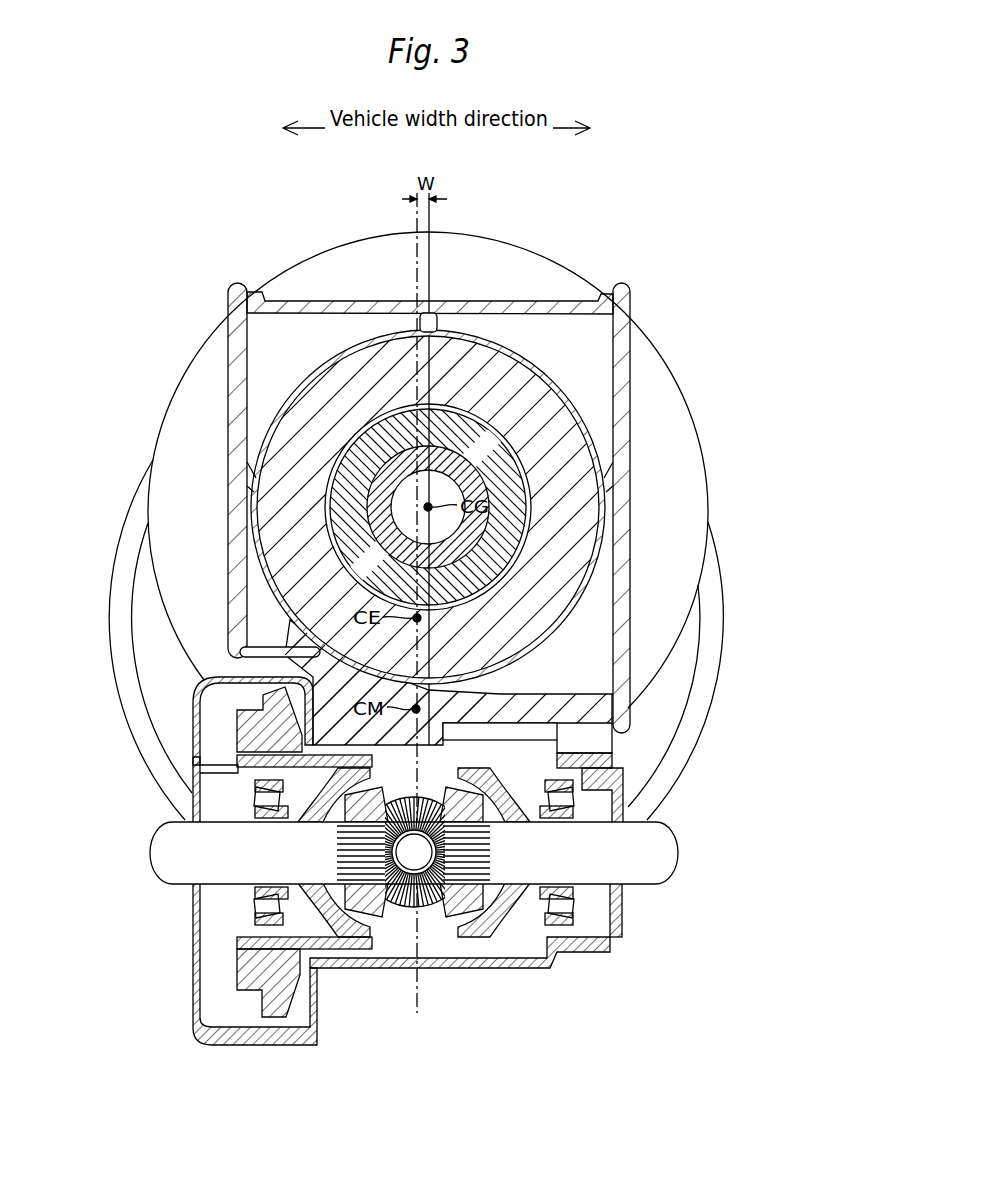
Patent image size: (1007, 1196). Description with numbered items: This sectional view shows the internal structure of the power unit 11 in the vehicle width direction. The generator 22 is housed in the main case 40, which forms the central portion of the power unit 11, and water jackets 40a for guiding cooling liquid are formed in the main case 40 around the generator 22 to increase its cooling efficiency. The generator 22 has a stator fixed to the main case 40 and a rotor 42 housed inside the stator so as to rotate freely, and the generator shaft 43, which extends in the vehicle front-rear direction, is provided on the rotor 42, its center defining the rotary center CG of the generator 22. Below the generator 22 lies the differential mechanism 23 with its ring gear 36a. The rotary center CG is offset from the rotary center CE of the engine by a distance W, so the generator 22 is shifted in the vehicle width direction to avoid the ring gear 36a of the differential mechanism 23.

The power unit 11 is at (640, 216).
The generator 22 is at (768, 458).
The differential mechanism 23 is at (397, 832).
The ring gear 36a is at (253, 975).
The main case 40 is at (528, 302).
The water jacket 40a is at (273, 365).
The rotor 42 is at (527, 508).
The generator shaft 43 is at (380, 490).